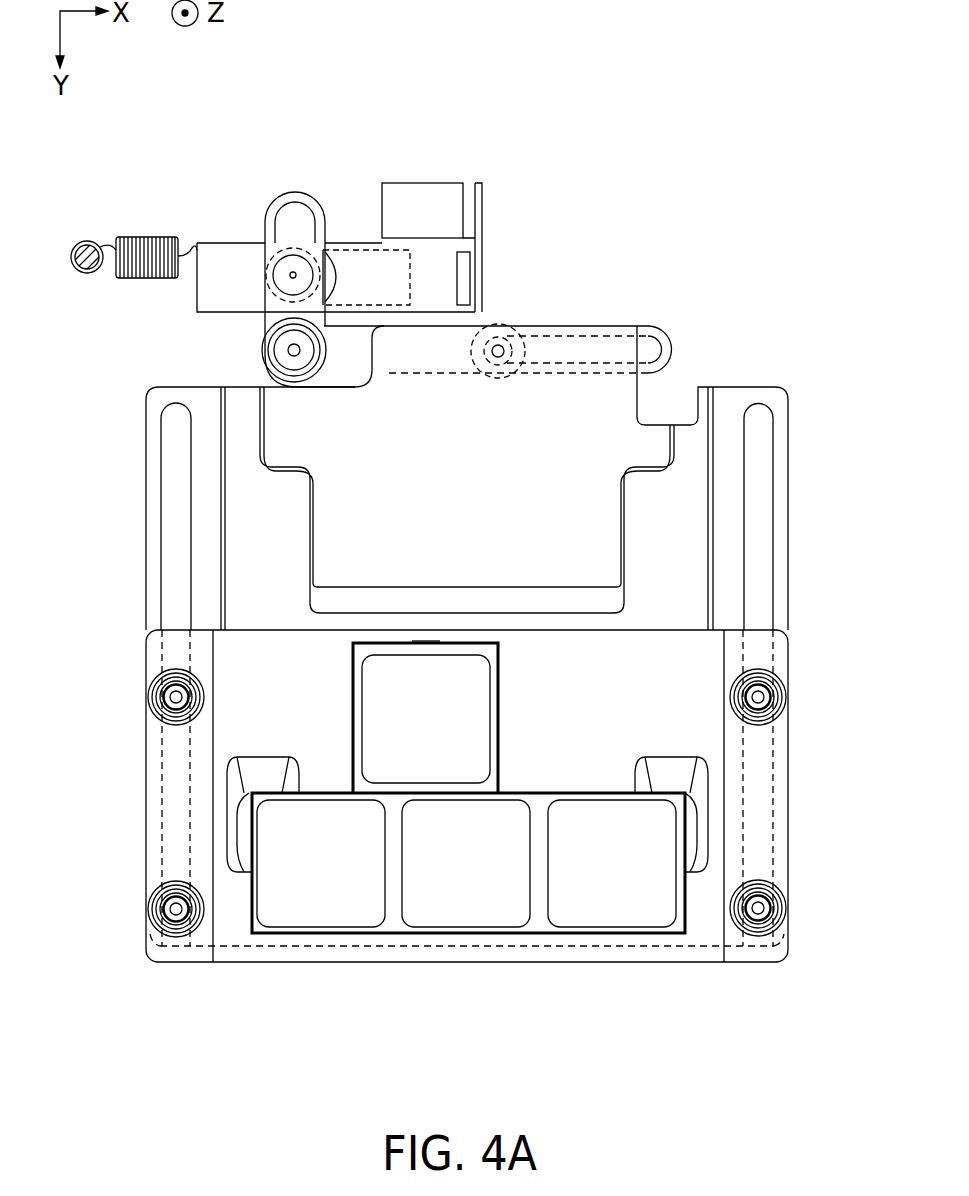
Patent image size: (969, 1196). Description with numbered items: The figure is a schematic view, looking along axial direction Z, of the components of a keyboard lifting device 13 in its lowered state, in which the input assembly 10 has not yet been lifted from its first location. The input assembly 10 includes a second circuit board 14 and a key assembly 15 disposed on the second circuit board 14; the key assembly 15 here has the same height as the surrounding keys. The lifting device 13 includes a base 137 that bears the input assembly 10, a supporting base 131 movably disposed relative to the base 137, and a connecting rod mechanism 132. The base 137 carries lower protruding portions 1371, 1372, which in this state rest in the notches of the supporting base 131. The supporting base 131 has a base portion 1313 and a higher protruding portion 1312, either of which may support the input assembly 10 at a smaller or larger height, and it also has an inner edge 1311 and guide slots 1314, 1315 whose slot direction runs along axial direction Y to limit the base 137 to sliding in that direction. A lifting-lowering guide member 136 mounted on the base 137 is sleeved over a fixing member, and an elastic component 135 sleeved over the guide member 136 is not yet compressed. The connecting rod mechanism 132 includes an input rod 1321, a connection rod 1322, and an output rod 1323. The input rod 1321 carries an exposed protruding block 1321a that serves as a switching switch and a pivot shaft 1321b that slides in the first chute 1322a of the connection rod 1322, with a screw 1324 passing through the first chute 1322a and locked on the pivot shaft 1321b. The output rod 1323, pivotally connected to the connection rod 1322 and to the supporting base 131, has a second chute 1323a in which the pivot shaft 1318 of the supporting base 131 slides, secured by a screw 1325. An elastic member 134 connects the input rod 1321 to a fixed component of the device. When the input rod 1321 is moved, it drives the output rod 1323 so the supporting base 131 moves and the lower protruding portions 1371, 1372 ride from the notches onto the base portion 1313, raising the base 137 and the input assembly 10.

The input assembly 10 is at (378, 720).
The lifting device 13 is at (170, 213).
The supporting base 131 is at (550, 620).
The inner bottom edge 1311 is at (600, 600).
The protruding portion 1312 is at (608, 516).
The base portion 1313 is at (607, 622).
The guide slot 1314 is at (176, 457).
The guide slot 1315 is at (758, 437).
The pivot shaft 1318 is at (517, 345).
The connecting rod mechanism 132 is at (437, 188).
The input rod 1321 is at (246, 262).
The protruding block 1321a is at (343, 268).
The pivot shaft 1321b is at (288, 282).
The connection rod 1322 is at (282, 200).
The first chute 1322a is at (300, 225).
The output rod 1323 is at (672, 350).
The second chute 1323a is at (650, 345).
The screw 1324 is at (293, 351).
The screw 1325 is at (497, 330).
The elastic member 134 is at (140, 245).
The elastic component 135 is at (165, 688).
The lifting-lowering guide member 136 is at (163, 700).
The base 137 is at (697, 733).
The lower protruding portion 1371 is at (246, 815).
The lower protruding portion 1372 is at (692, 817).
The second circuit board 14 is at (395, 926).
The key assembly 15 is at (325, 910).